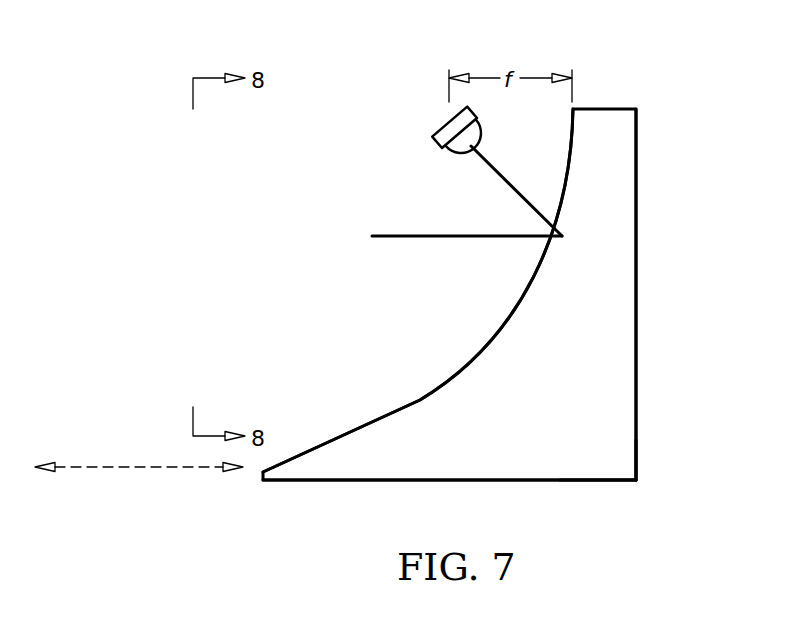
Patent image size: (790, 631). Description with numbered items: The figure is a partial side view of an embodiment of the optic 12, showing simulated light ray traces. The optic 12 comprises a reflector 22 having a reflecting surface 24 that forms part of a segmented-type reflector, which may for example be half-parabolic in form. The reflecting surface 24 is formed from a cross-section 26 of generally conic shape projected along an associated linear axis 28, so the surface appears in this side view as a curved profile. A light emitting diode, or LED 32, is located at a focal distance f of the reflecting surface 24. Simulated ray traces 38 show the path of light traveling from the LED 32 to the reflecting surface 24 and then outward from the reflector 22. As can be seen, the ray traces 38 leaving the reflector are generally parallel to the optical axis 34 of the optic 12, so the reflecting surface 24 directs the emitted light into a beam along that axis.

The optic 12 is at (630, 70).
The reflector 22 is at (620, 328).
The reflecting surface 24 is at (525, 308).
The cross-section 26 is at (380, 468).
The linear axis 28 is at (608, 470).
The light emitting diode (LED) 32 is at (478, 111).
The optical axis 34 is at (112, 467).
The simulated ray traces 38 is at (410, 238).